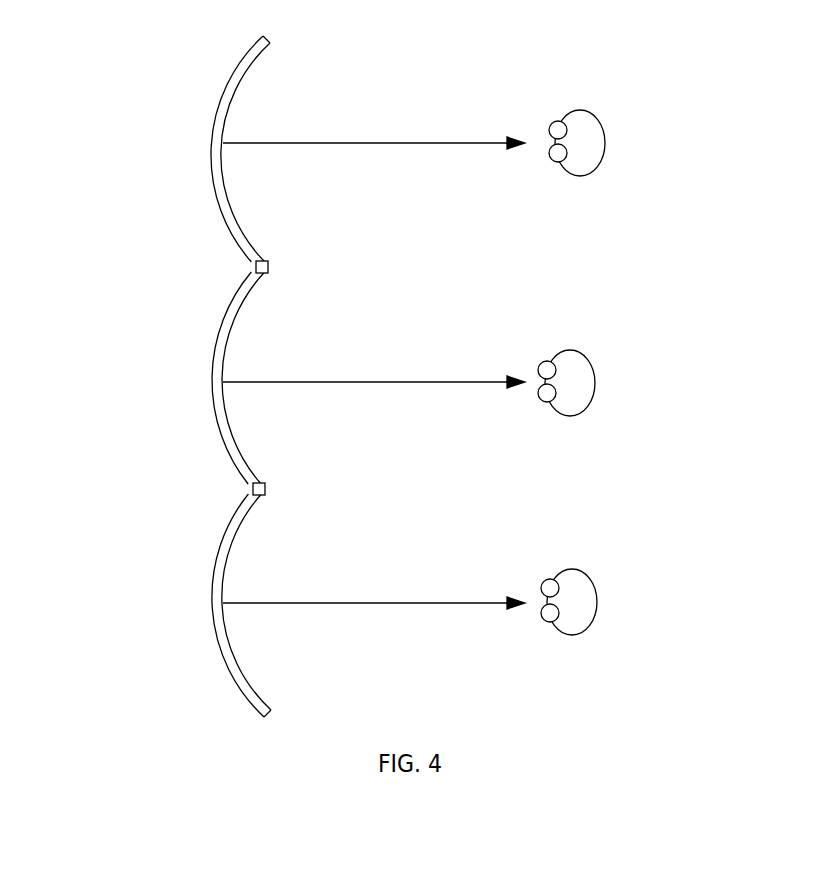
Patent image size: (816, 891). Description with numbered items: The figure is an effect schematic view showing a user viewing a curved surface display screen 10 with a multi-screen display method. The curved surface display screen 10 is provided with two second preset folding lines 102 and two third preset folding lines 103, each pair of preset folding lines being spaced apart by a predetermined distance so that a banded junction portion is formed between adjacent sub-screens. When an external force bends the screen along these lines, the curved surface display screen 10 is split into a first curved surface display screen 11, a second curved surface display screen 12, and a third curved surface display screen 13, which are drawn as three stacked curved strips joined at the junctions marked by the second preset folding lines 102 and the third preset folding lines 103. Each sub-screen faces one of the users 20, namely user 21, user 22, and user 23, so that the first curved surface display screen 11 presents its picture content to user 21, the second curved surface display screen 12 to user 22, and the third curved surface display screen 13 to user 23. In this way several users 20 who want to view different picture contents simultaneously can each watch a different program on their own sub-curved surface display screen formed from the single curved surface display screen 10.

The curved surface display screen 10 is at (107, 93).
The first curved surface display screen 11 is at (212, 140).
The second curved surface display screen 12 is at (213, 380).
The third curved surface display screen 13 is at (213, 596).
The second preset folding lines 102 is at (268, 262).
The third preset folding lines 103 is at (265, 484).
The users 20 is at (663, 273).
The user 21 is at (590, 174).
The user 22 is at (578, 414).
The user 23 is at (578, 633).